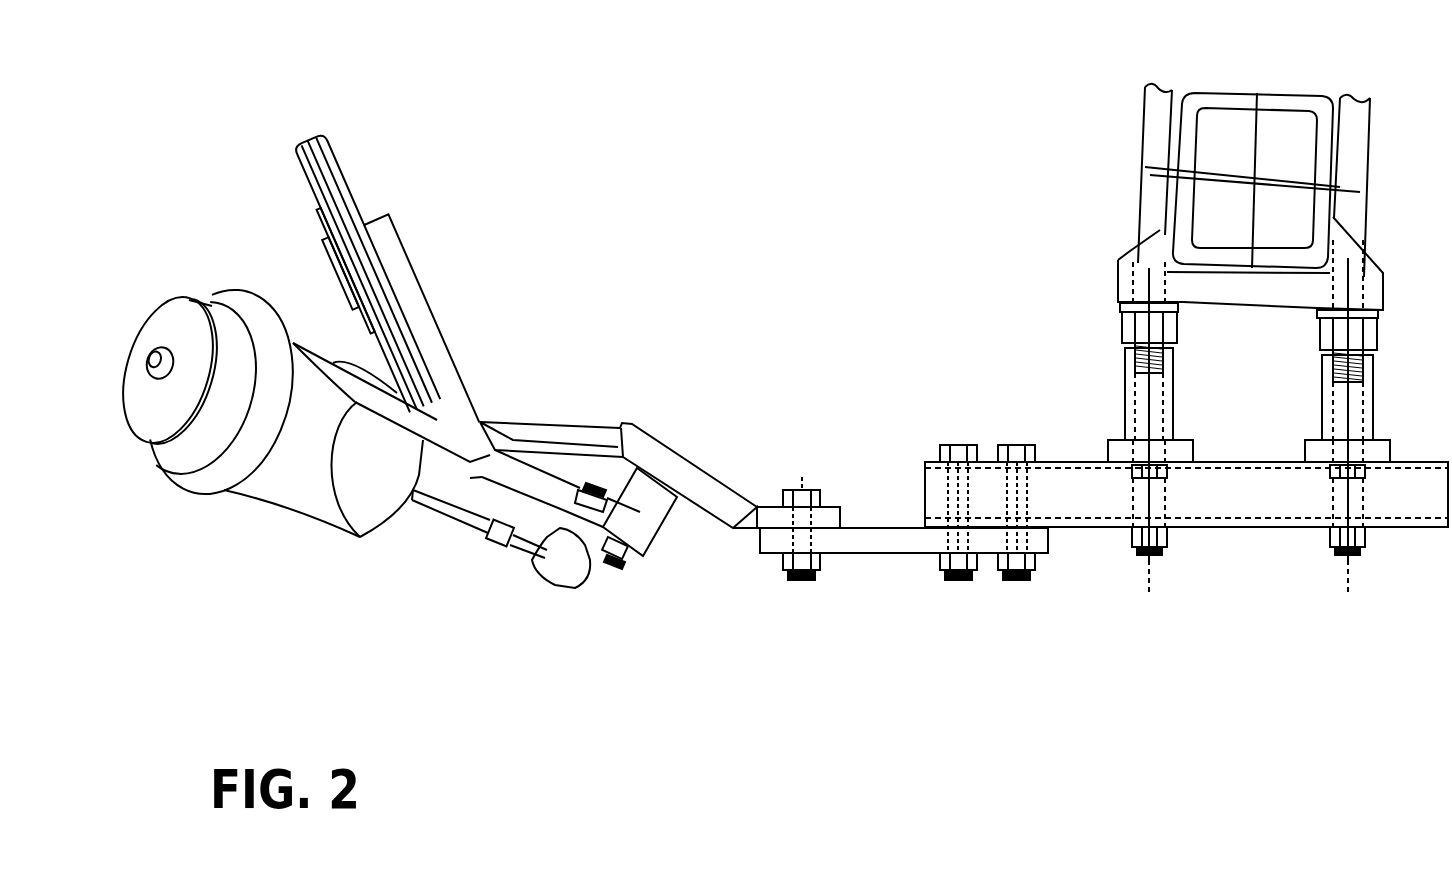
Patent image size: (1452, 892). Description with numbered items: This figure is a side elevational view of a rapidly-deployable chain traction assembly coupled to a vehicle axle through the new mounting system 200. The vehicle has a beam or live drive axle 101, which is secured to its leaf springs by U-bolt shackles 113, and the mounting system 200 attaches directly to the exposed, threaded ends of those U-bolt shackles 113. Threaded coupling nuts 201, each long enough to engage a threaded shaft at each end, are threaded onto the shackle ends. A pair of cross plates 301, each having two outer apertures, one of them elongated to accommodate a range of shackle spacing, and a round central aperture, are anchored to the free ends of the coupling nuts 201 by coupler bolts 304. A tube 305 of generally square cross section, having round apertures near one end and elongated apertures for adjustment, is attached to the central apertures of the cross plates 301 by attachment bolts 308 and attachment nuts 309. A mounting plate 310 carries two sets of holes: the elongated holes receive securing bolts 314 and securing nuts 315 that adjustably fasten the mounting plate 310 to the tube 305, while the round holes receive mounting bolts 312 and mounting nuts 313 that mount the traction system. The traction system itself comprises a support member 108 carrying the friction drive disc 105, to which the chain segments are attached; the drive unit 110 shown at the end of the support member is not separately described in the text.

The drive axle 101 is at (1238, 100).
The friction drive disc 105 is at (296, 143).
The support member 108 is at (448, 381).
The motor 110 is at (338, 515).
The U-bolt shackles 113 is at (1150, 204).
The mounting system 200 is at (903, 296).
The threaded coupling nuts 201 is at (1327, 390).
The cross plates 301 is at (1307, 451).
The coupler bolts 304 is at (1290, 535).
The tube 305 is at (1100, 501).
The attachment bolts 308 is at (1142, 552).
The attachment nuts 309 is at (1336, 553).
The mounting plate 310 is at (902, 540).
The mounting bolts 312 is at (815, 498).
The mounting nuts 313 is at (785, 558).
The securing bolts 314 is at (1008, 445).
The securing nuts 315 is at (999, 565).